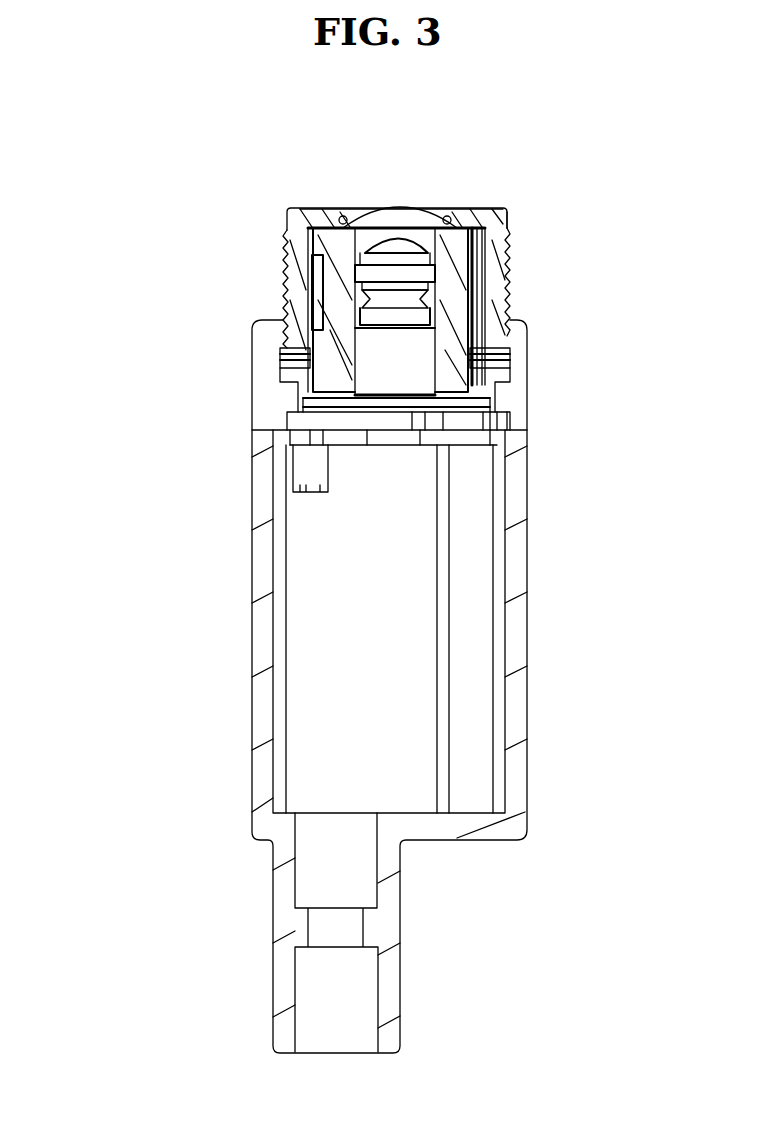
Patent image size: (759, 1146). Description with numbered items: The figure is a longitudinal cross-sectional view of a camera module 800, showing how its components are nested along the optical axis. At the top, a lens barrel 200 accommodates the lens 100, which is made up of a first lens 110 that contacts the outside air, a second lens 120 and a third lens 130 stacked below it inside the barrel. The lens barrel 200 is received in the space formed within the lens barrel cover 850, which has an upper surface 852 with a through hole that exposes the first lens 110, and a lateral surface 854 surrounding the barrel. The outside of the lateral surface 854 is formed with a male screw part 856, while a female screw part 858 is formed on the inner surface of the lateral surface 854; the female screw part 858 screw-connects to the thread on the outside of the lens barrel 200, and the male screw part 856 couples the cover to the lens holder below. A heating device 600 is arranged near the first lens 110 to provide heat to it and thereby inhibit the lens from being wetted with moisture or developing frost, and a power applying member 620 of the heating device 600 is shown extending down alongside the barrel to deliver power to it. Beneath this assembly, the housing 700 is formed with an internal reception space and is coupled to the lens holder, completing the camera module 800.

The lens 100 is at (442, 215).
The first lens 110 is at (397, 210).
The second lens 120 is at (412, 238).
The third lens 130 is at (405, 296).
The lens barrel 200 is at (463, 385).
The heating device 600 is at (369, 311).
The power applying member 620 is at (476, 292).
The housing 700 is at (558, 618).
The camera module 800 is at (336, 275).
The lens barrel cover 850 is at (513, 272).
The upper surface 852 is at (320, 207).
The lateral surface 854 is at (507, 227).
The male screw part 856 is at (284, 253).
The female screw part 858 is at (283, 343).